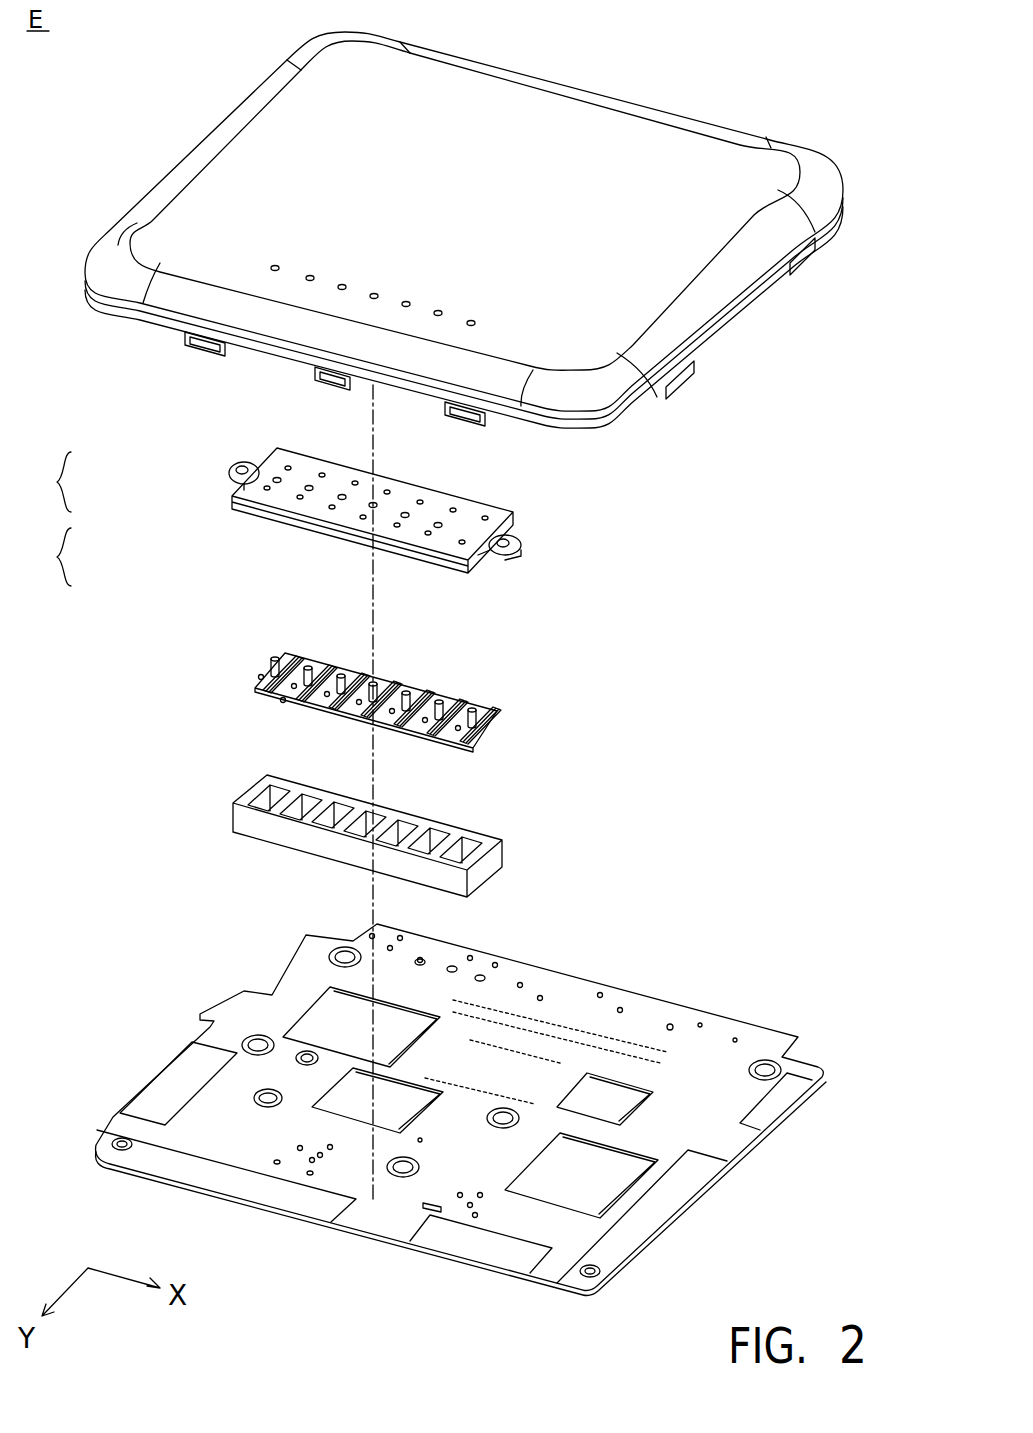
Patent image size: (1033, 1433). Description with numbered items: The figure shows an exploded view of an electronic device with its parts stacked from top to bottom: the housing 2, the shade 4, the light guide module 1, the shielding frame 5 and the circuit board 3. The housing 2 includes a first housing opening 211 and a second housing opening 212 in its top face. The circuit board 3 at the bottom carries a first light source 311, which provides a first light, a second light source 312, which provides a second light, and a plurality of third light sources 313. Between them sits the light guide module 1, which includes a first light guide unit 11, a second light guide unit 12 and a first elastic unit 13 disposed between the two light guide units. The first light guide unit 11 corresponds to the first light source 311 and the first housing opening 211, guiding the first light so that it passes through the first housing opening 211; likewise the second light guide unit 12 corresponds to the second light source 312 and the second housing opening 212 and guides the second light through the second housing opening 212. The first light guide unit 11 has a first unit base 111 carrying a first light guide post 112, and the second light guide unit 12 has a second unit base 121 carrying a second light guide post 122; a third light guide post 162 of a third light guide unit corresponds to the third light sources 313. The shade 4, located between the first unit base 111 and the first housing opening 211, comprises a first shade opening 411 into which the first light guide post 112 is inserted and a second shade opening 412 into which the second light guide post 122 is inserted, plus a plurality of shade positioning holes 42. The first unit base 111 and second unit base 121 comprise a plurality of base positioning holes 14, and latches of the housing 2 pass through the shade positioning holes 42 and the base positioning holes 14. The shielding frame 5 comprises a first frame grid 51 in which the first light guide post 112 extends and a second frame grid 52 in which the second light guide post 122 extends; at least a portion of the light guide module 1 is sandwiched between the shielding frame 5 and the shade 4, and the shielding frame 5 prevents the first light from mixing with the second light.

The housing 2 is at (716, 304).
The first housing opening 211 is at (276, 272).
The second housing opening 212 is at (310, 282).
The shade 4 is at (556, 546).
The first shade opening 411 is at (277, 483).
The second shade opening 412 is at (309, 491).
The shade positioning holes 42 is at (462, 546).
The light guide module 1 is at (401, 677).
The first light guide unit 11 is at (75, 481).
The first unit base 111 is at (270, 680).
The first light guide post 112 is at (296, 658).
The second light guide unit 12 is at (75, 558).
The second unit base 121 is at (340, 690).
The second light guide post 122 is at (305, 663).
The third light guide post 162 is at (437, 706).
The first elastic unit 13 is at (284, 703).
The base positioning holes 14 is at (262, 694).
The shielding frame 5 is at (422, 841).
The first frame grid 51 is at (263, 803).
The second frame grid 52 is at (293, 812).
The circuit board 3 is at (490, 1127).
The first light source 311 is at (277, 1165).
The second light source 312 is at (310, 1176).
The third light sources 313 is at (440, 1212).